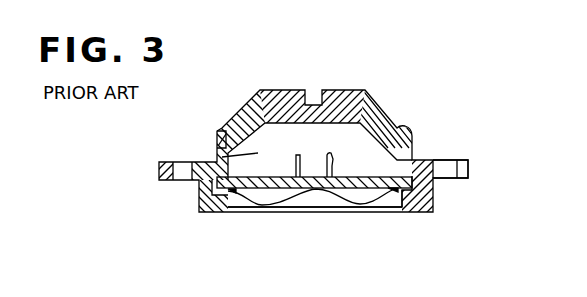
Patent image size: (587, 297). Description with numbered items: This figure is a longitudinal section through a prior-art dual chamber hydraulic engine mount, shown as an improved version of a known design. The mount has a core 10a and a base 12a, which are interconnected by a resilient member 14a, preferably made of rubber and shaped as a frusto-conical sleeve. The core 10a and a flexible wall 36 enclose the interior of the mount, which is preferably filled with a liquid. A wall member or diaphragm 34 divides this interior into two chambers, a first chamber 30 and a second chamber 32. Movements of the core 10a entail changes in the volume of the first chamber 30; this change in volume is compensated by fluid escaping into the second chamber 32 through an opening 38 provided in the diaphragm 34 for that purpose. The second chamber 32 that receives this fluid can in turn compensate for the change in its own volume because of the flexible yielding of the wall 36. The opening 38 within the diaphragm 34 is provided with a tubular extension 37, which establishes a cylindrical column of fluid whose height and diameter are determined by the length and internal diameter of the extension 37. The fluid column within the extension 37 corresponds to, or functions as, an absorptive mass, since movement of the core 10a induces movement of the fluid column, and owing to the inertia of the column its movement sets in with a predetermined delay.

The core 10a is at (339, 90).
The resilient member 14a is at (381, 113).
The base 12a is at (421, 157).
The first chamber 30 is at (218, 152).
The tubular extension 37 is at (333, 166).
The second chamber 32 is at (262, 200).
The diaphragm 34 is at (294, 196).
The opening 38 is at (316, 189).
The flexible wall 36 is at (362, 204).